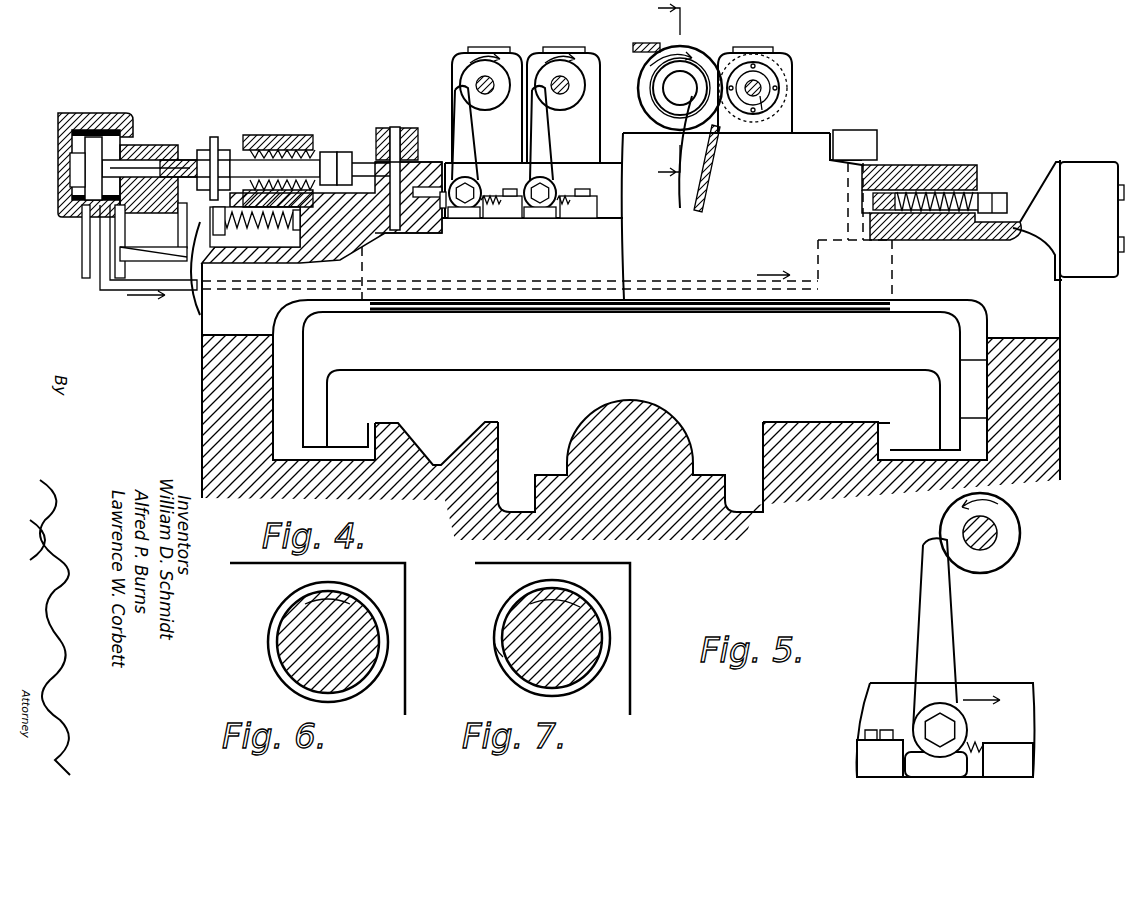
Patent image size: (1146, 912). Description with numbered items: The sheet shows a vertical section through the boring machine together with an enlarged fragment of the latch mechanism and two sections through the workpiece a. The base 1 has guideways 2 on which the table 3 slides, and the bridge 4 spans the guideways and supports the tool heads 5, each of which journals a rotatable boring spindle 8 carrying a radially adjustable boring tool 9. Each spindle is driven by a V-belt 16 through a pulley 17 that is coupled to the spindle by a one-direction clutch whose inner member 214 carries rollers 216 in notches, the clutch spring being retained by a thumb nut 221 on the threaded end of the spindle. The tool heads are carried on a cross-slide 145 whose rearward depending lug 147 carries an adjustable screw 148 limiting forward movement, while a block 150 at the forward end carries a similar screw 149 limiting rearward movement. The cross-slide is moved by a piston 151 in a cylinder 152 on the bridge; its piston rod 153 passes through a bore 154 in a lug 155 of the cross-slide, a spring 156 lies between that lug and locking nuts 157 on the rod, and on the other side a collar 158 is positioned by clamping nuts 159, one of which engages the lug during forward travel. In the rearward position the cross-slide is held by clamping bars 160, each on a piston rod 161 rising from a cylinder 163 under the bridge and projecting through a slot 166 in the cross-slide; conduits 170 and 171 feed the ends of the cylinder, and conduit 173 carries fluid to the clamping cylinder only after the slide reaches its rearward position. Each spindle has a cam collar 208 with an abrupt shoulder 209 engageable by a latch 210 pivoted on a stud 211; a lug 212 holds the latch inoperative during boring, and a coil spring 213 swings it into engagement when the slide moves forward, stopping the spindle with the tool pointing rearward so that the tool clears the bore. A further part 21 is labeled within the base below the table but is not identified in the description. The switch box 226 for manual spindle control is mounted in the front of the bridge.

In FIG. 4, the base 1 is at (1050, 425).
In FIG. 4, the guideways 2 is at (402, 433).
In FIG. 4, the table 3 is at (615, 352).
In FIG. 4, the bridge 4 is at (1050, 303).
In FIG. 4, the tool head 5 is at (510, 62).
In FIG. 4, the boring spindle 8 is at (482, 85).
In FIG. 5, the boring spindle 8 is at (995, 535).
In FIG. 6, the boring spindle 8 is at (283, 640).
In FIG. 7, the boring spindle 8 is at (600, 655).
In FIG. 4, the boring tool 9 is at (660, 94).
In FIG. 6, the boring tool 9 is at (322, 587).
In FIG. 7, the boring tool 9 is at (497, 645).
In FIG. 4, the V-belt 16 is at (704, 173).
In FIG. 4, the pulley 17 is at (700, 58).
In FIG. 4, the dome bearing 21 is at (645, 412).
In FIG. 4, the cross-slide 145 is at (898, 177).
In FIG. 5, the cross-slide 145 is at (1012, 690).
In FIG. 4, the depending lug 147 is at (270, 225).
In FIG. 4, the adjustable screw 148 is at (198, 282).
In FIG. 4, the adjustable screw 149 is at (1003, 192).
In FIG. 4, the block 150 is at (962, 192).
In FIG. 4, the piston 151 is at (88, 150).
In FIG. 4, the cylinder 152 is at (100, 118).
In FIG. 4, the piston rod 153 is at (165, 160).
In FIG. 4, the bore 154 is at (257, 148).
In FIG. 4, the lug 155 is at (245, 148).
In FIG. 4, the spring 156 is at (322, 152).
In FIG. 4, the locking nuts 157 is at (340, 150).
In FIG. 4, the collar 158 is at (213, 140).
In FIG. 4, the clamping nuts 159 is at (218, 135).
In FIG. 4, the clamping bar 160 is at (404, 127).
In FIG. 4, the piston rod 161 is at (395, 125).
In FIG. 4, the cylinder 163 is at (362, 270).
In FIG. 4, the slot 166 is at (417, 163).
In FIG. 4, the conduit 170 is at (83, 258).
In FIG. 4, the conduit 171 is at (118, 233).
In FIG. 4, the conduit 173 is at (115, 283).
In FIG. 4, the collar 208 is at (487, 99).
In FIG. 5, the collar 208 is at (1017, 543).
In FIG. 5, the shoulder 209 is at (945, 540).
In FIG. 4, the latch 210 is at (460, 146).
In FIG. 5, the latch 210 is at (927, 573).
In FIG. 4, the stud 211 is at (463, 200).
In FIG. 5, the stud 211 is at (950, 733).
In FIG. 4, the lug 212 is at (443, 208).
In FIG. 5, the lug 212 is at (866, 750).
In FIG. 5, the coil spring 213 is at (1035, 750).
In FIG. 4, the inner member 214 is at (771, 92).
In FIG. 4, the roller 216 is at (762, 110).
In FIG. 4, the thumb nut 221 is at (700, 190).
In FIG. 4, the switch box 226 is at (1090, 163).
In FIG. 6, the workpiece a is at (395, 652).
In FIG. 7, the workpiece a is at (622, 593).